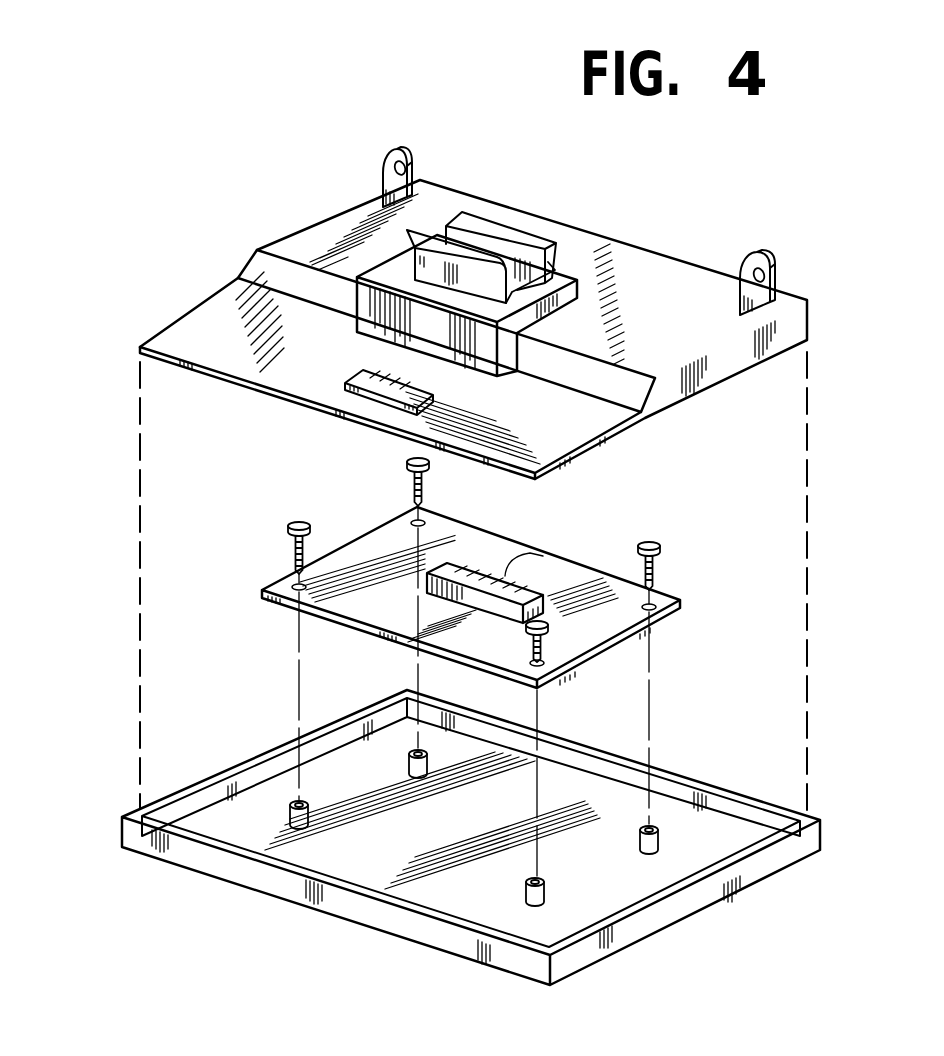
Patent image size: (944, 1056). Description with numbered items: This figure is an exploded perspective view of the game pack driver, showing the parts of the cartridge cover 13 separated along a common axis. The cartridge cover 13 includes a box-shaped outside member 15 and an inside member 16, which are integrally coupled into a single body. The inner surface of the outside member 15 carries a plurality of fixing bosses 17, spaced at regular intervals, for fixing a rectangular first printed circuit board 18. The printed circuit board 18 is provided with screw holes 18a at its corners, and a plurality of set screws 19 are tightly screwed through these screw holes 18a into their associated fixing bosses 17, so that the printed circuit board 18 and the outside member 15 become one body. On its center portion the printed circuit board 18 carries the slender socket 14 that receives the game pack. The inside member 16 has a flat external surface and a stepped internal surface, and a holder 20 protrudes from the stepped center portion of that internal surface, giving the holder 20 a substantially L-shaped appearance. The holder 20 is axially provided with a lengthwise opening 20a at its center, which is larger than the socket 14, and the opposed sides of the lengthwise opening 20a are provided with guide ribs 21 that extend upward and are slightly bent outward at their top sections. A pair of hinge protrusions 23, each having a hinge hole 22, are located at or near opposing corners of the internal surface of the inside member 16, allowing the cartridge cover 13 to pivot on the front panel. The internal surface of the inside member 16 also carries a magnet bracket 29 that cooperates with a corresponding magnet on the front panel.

The cartridge cover 13 is at (123, 569).
The socket 14 is at (520, 562).
The outside member 15 is at (132, 830).
The inside member 16 is at (158, 352).
The fixing bosses 17 is at (658, 838).
The first printed circuit board 18 is at (664, 626).
The screw holes 18a is at (664, 600).
The set screws 19 is at (656, 566).
The holder 20 is at (366, 306).
The lengthwise opening 20a is at (552, 278).
The guide ribs 21 is at (458, 232).
The hinge holes 22 is at (406, 168).
The hinge protrusions 23 is at (396, 148).
The magnet bracket 29 is at (345, 393).